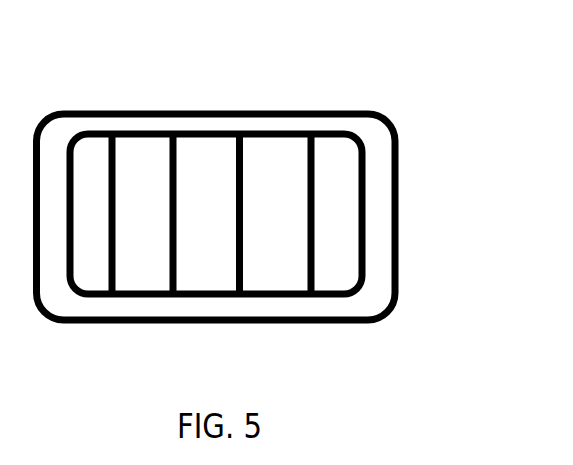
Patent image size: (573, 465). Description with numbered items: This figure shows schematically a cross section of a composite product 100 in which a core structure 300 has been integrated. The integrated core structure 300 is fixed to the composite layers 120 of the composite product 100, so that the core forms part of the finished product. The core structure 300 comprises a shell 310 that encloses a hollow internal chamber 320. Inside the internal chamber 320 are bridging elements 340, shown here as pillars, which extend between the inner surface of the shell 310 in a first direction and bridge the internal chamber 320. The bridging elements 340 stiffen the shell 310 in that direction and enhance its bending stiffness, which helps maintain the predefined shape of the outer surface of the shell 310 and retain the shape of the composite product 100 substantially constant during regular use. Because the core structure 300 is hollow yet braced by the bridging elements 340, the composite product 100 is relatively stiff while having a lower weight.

The composite product 100 is at (271, 204).
The composite layers 120 is at (165, 110).
The core structure 300 is at (276, 213).
The shell 310 is at (217, 131).
The internal chamber 320 is at (272, 237).
The bridging elements 340 is at (177, 279).